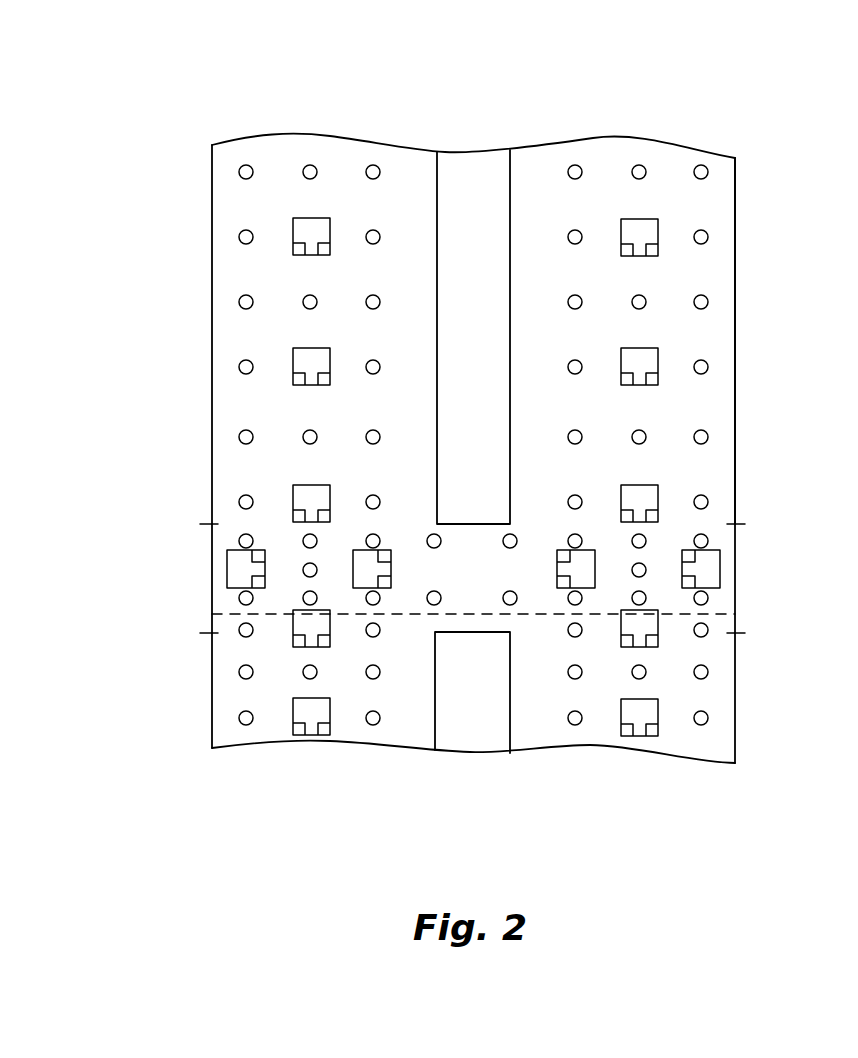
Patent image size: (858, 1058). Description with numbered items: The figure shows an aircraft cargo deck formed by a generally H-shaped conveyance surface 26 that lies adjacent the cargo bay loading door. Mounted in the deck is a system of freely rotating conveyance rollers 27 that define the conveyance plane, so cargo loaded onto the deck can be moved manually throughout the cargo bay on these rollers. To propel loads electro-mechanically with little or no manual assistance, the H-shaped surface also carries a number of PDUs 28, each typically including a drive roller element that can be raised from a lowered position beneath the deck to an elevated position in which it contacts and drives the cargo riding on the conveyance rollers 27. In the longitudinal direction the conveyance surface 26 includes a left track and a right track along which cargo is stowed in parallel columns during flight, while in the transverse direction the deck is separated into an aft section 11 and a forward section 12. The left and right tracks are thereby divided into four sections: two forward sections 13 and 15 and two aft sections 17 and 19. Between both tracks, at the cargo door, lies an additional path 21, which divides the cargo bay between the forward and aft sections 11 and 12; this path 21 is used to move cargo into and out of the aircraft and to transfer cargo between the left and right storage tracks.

The aft section 11 is at (472, 755).
The forward section 12 is at (190, 303).
The forward section of left track 13 is at (386, 165).
The forward section of right track 15 is at (722, 180).
The aft section of left track 17 is at (401, 729).
The aft section of right track 19 is at (705, 750).
The additional path 21 is at (168, 586).
The H-shaped conveyance surface 26 is at (484, 183).
The conveyance rollers 27 is at (380, 237).
The PDUs 28 is at (330, 497).